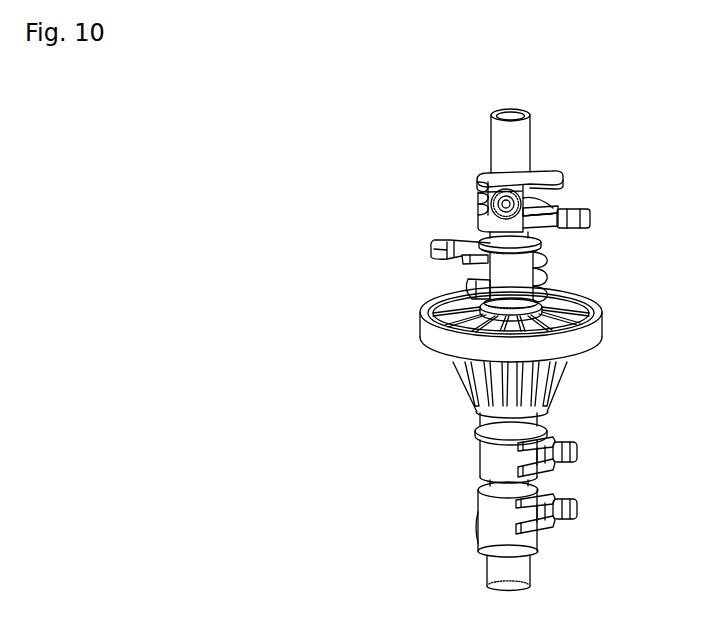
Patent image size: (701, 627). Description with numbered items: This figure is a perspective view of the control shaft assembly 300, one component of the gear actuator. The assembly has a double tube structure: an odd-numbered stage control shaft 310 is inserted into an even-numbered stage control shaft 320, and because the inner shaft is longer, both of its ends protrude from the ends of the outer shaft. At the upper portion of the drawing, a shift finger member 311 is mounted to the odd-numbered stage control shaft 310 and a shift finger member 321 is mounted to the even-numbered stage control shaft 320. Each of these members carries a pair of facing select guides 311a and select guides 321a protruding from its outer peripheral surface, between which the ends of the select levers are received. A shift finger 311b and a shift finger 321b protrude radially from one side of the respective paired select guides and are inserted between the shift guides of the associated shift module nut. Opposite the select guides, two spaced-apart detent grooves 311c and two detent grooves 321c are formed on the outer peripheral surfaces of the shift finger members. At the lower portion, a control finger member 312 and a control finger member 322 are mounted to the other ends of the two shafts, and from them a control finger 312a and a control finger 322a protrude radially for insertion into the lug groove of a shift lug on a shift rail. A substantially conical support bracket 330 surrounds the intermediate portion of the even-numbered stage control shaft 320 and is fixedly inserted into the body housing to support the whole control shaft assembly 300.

The control shaft assembly 300 is at (560, 120).
The odd-numbered stage control shaft 310 is at (488, 142).
The shift finger member 311 is at (510, 172).
The select guides 311a is at (545, 207).
The shift finger 311b is at (591, 219).
The detent grooves 311c is at (487, 190).
The control finger member 312 is at (488, 527).
The control finger 312a is at (578, 507).
The even-numbered stage control shaft 320 is at (492, 424).
The shift finger member 321 is at (515, 268).
The select guides 321a is at (470, 283).
The shift finger 321b is at (432, 254).
The detent grooves 321c is at (548, 280).
The control finger member 322 is at (488, 459).
The control finger 322a is at (578, 450).
The support bracket 330 is at (432, 337).